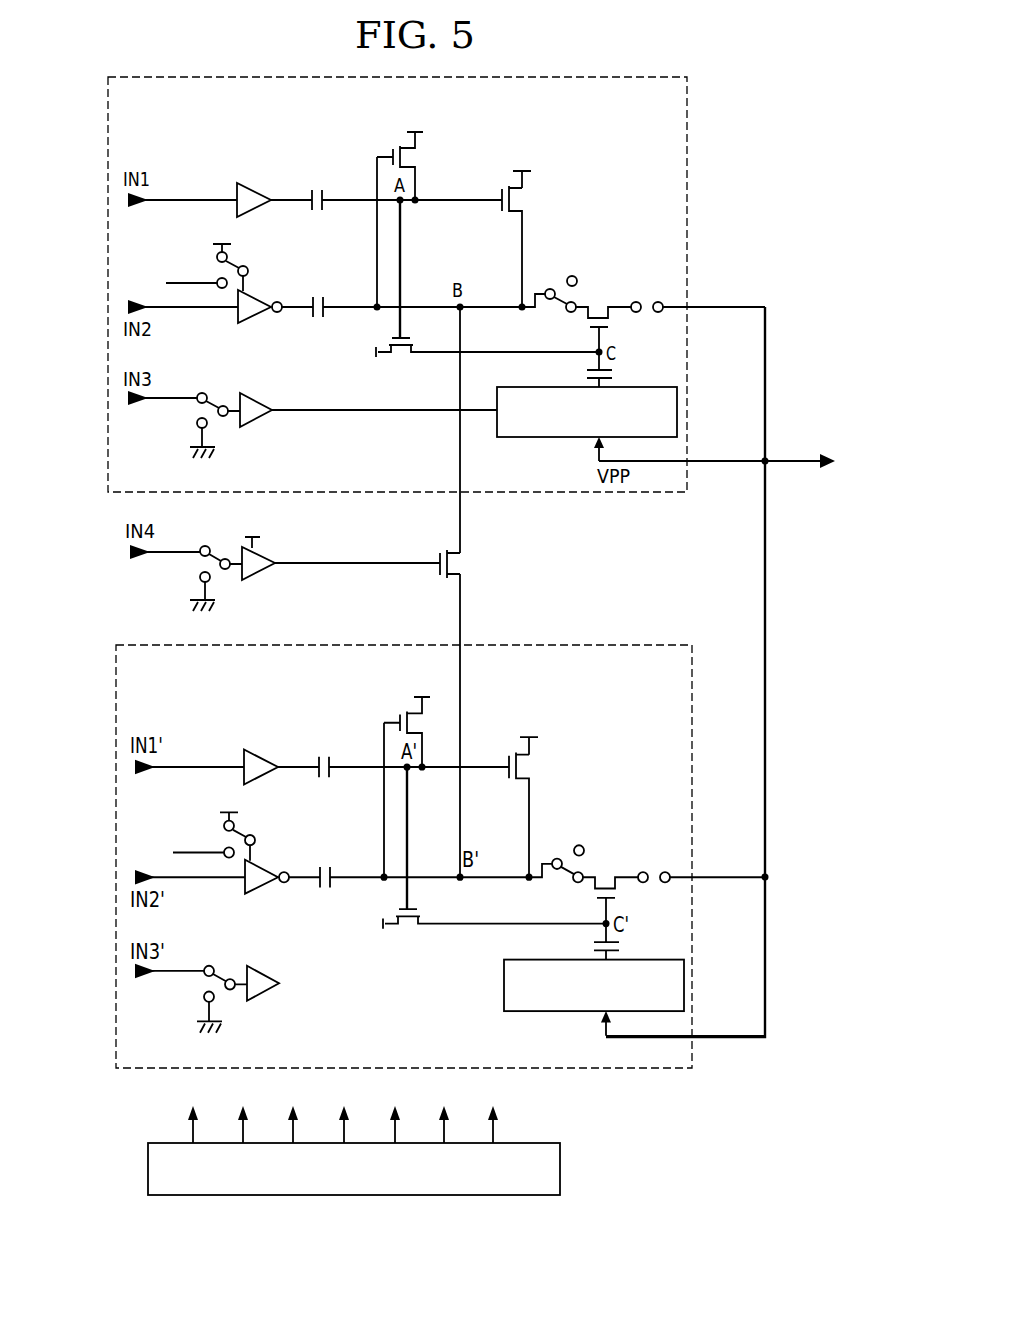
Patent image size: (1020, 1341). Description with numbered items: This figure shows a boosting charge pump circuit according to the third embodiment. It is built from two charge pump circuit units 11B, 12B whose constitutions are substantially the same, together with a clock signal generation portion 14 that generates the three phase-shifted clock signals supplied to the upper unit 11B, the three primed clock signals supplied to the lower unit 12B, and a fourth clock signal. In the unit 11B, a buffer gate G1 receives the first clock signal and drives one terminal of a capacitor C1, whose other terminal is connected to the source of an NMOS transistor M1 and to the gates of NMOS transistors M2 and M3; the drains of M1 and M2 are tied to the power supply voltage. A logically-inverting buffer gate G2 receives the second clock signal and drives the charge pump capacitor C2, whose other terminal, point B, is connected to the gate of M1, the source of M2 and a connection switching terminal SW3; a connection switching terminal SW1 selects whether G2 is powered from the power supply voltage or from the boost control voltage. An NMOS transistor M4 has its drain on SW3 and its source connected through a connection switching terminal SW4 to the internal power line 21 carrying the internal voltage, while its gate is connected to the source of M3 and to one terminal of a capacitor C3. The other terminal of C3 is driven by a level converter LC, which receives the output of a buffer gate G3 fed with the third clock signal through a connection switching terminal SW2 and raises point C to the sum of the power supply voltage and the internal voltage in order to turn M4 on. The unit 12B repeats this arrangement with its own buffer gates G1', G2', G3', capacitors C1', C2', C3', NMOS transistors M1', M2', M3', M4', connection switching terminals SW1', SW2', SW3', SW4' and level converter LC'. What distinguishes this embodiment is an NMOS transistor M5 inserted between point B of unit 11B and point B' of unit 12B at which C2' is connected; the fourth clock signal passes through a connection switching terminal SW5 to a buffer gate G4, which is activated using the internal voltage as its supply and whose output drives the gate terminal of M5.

The charge pump circuit unit 11B is at (108, 97).
The charge pump circuit unit 12B is at (116, 666).
The clock signal generation portion 14 is at (530, 1143).
The internal power line 21 is at (792, 458).
The buffer gate G1 is at (264, 191).
The logically-inverting buffer gate G2 is at (265, 298).
The buffer gate G3 is at (368, 404).
The buffer gate G4 is at (270, 557).
The capacitor C1 is at (317, 188).
The capacitor C2 is at (318, 295).
The capacitor C3 is at (614, 369).
The NMOS transistor M1 is at (391, 156).
The NMOS transistor M2 is at (530, 228).
The NMOS transistor M3 is at (468, 345).
The NMOS transistor M4 is at (588, 329).
The NMOS transistor M5 is at (450, 564).
The connection switching terminal SW1 is at (194, 258).
The connection switching terminal SW2 is at (212, 418).
The connection switching terminal SW3 is at (561, 274).
The connection switching terminal SW4 is at (697, 323).
The connection switching terminal SW5 is at (213, 545).
The level converter LC is at (583, 400).
The inverter G1' is at (275, 758).
The inverter G2' is at (275, 867).
The inverter G3' is at (276, 978).
The capacitor C1' is at (327, 754).
The capacitor C2' is at (328, 864).
The capacitor C3' is at (624, 942).
The transistor M1' is at (396, 722).
The transistor M2' is at (540, 796).
The transistor M3' is at (475, 917).
The transistor M4' is at (593, 900).
The switch SW1' is at (201, 827).
The switch SW2' is at (219, 992).
The switch SW3' is at (571, 843).
The switch SW4' is at (701, 893).
The level converter LC' is at (588, 973).